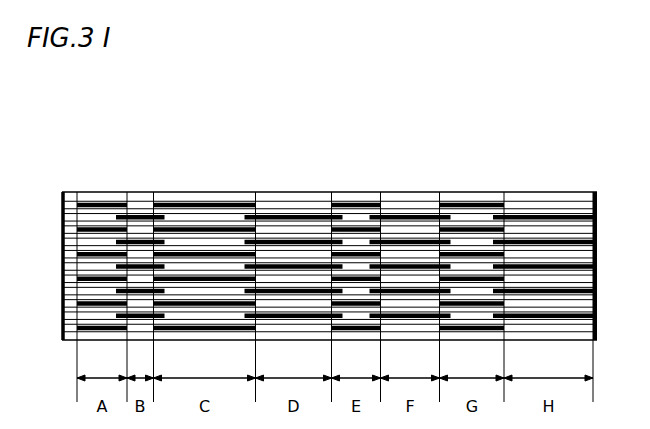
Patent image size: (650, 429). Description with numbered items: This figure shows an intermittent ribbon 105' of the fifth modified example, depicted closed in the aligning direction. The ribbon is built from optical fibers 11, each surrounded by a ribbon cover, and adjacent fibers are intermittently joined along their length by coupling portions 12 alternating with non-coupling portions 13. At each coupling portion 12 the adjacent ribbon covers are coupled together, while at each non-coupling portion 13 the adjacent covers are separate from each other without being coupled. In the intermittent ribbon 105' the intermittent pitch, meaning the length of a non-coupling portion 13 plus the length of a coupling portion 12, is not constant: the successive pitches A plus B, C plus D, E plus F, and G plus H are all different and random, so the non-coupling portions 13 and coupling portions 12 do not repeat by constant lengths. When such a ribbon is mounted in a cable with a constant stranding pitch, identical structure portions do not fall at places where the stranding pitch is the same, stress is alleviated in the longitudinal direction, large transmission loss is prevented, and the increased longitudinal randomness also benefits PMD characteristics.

The optical fiber 11 is at (63, 221).
The coupling portion 12 is at (138, 202).
The non-coupling portion 13 is at (97, 202).
The intermittent ribbon 105' is at (329, 210).